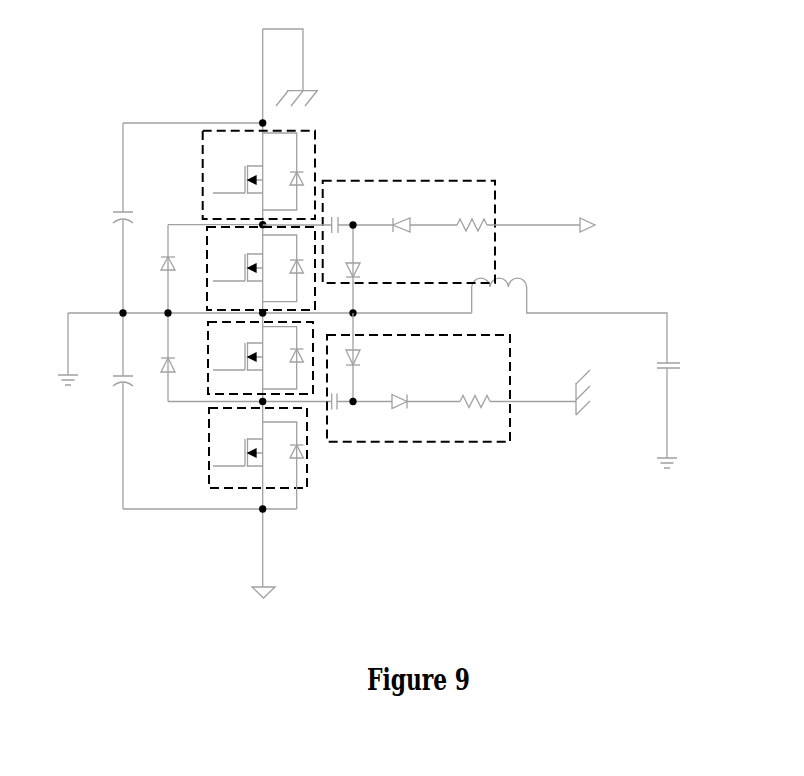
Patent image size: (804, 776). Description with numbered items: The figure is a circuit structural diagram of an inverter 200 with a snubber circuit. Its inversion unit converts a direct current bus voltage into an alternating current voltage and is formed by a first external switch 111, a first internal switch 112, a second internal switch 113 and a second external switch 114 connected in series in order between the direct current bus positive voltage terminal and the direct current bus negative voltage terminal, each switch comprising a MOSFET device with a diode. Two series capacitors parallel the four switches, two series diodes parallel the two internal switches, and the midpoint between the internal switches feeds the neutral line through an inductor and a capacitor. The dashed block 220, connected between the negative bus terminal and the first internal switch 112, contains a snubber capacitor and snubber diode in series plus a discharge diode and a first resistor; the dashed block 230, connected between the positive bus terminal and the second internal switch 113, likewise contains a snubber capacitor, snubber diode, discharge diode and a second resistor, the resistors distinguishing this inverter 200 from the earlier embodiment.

The inverter 200 is at (408, 306).
The first external switch 111 is at (320, 172).
The first internal switch 112 is at (207, 247).
The second internal switch 113 is at (212, 396).
The second external switch 114 is at (308, 449).
The first clamp circuit 220 is at (497, 197).
The second clamp circuit 230 is at (512, 436).